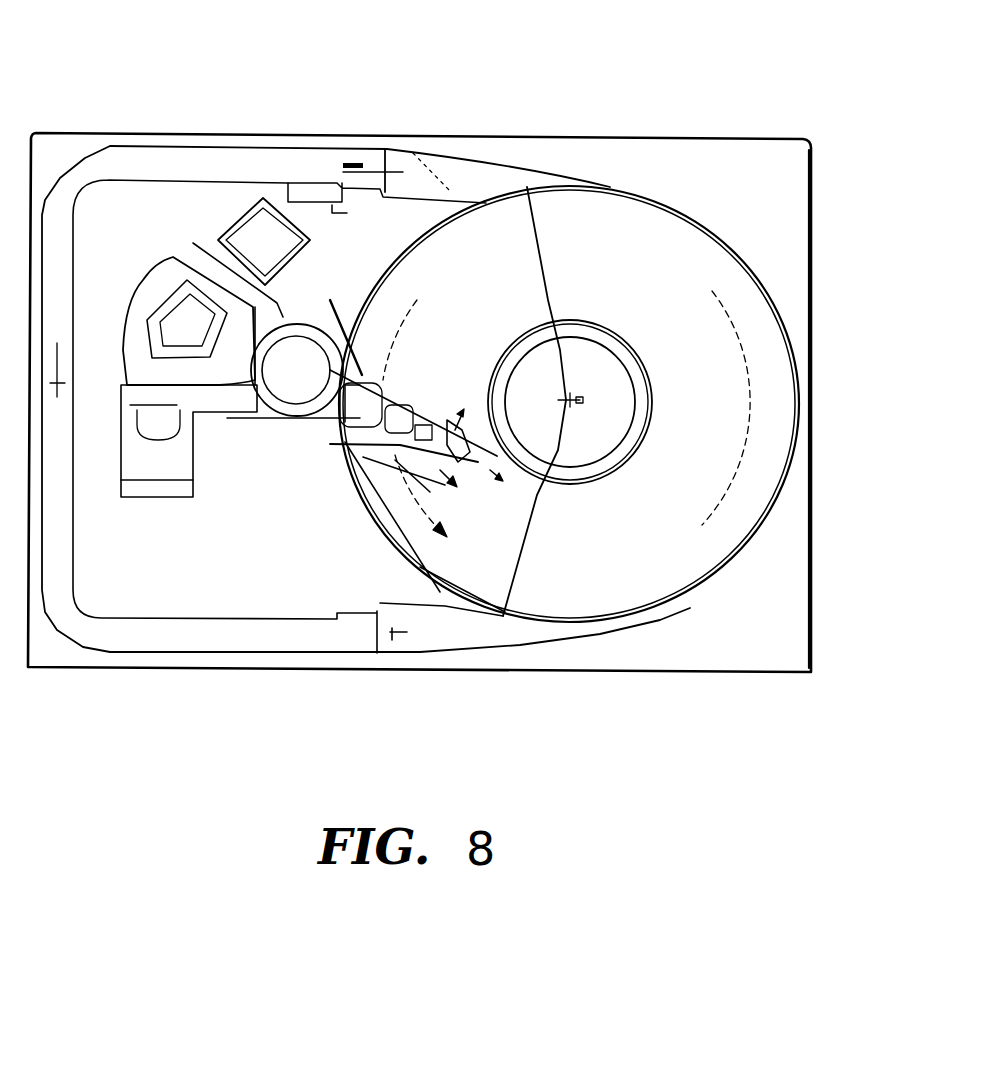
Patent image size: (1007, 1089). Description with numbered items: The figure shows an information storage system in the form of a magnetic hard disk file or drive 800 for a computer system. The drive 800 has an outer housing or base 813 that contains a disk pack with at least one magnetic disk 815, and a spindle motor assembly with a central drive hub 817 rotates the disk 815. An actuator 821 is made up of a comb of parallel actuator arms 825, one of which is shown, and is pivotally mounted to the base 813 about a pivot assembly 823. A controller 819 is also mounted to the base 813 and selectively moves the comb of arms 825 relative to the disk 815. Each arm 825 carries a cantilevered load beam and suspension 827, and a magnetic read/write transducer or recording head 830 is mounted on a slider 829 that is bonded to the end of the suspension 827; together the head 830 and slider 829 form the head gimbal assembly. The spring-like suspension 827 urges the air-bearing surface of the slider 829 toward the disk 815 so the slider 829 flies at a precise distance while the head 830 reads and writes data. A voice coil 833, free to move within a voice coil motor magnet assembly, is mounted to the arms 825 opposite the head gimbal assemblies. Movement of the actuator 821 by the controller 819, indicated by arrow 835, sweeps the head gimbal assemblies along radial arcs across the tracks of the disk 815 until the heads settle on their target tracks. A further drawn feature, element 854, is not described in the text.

The magnetic hard disk file or drive 800 is at (770, 31).
The outer housing or base 813 is at (648, 140).
The magnetic disk 815 is at (676, 220).
The central drive hub 817 is at (590, 326).
The controller 819 is at (387, 211).
The actuator 821 is at (219, 507).
The pivot assembly 823 is at (282, 427).
The actuator arm 825 is at (337, 318).
The load beam and suspension 827 is at (403, 396).
The slider 829 is at (507, 527).
The magnetic recording head 830 is at (550, 401).
The voice coil 833 is at (160, 260).
The arrow 835 is at (357, 500).
The latch 854 is at (238, 215).